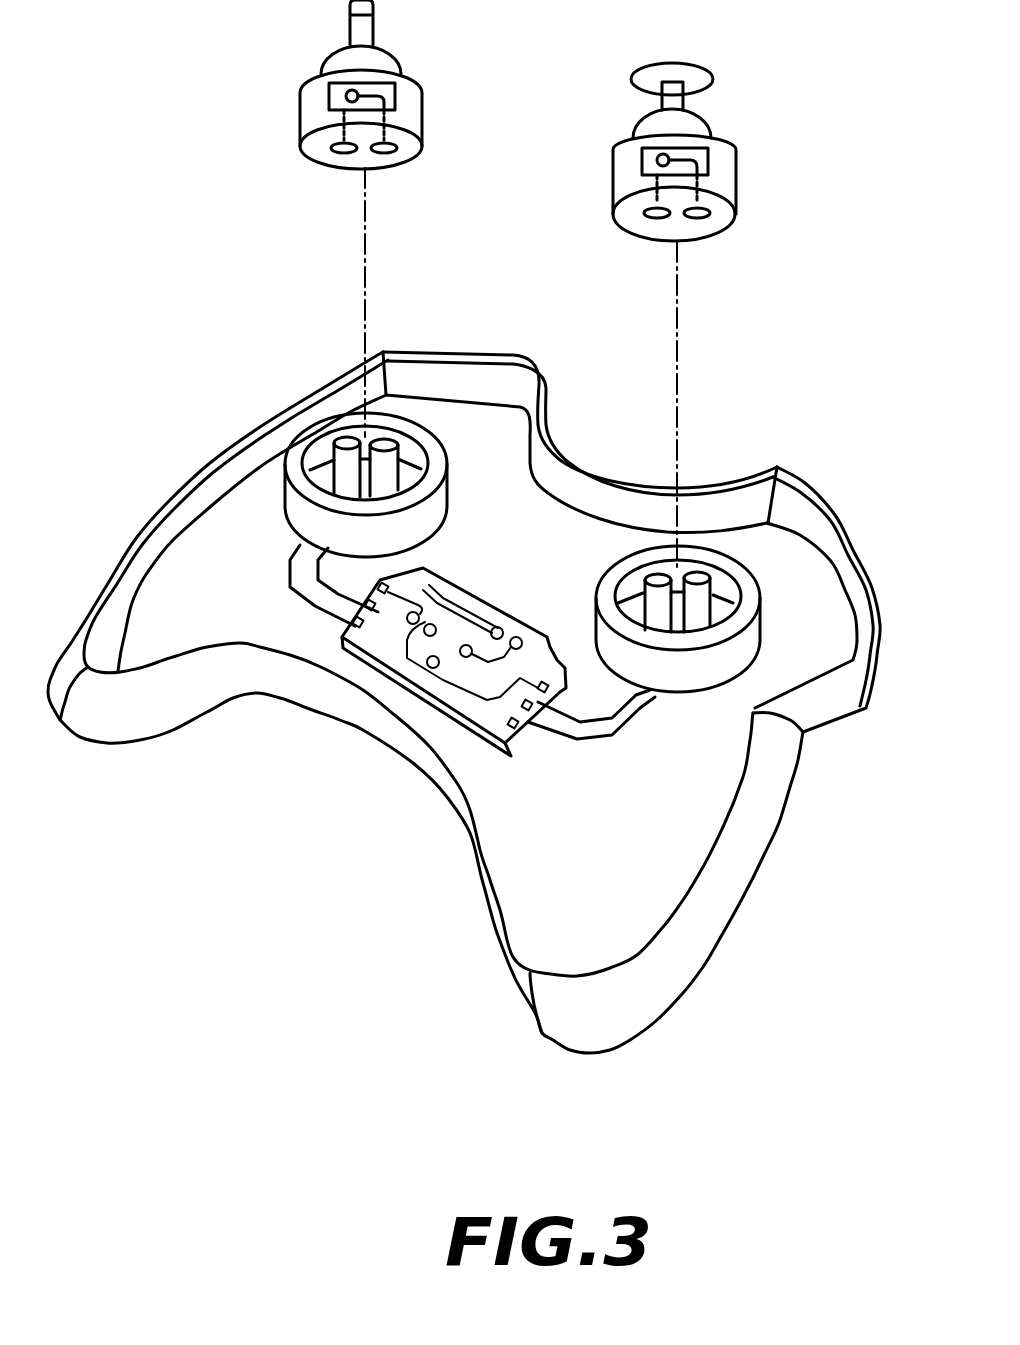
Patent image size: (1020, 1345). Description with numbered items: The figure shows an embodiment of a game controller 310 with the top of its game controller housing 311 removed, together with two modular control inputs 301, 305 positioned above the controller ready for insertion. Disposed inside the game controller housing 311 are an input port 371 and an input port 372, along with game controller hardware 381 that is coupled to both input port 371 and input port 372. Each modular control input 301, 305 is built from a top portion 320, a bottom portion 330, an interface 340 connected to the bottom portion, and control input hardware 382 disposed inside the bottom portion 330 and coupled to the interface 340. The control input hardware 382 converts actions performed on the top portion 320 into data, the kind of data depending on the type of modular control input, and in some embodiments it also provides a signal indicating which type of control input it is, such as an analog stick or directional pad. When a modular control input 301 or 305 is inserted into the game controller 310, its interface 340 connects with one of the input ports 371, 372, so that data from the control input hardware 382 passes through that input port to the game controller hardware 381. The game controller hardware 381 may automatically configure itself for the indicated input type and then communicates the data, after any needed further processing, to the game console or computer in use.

The modular control input 301 is at (727, 167).
The modular control input 305 is at (353, 218).
The game controller 310 is at (473, 702).
The game controller housing 311 is at (415, 762).
The top portion 320 is at (268, 2).
The bottom portion 330 is at (353, 138).
The interface 340 is at (387, 150).
The input port 371 is at (342, 440).
The input port 372 is at (702, 575).
The game controller hardware 381 is at (350, 657).
The control input hardware 382 is at (393, 90).